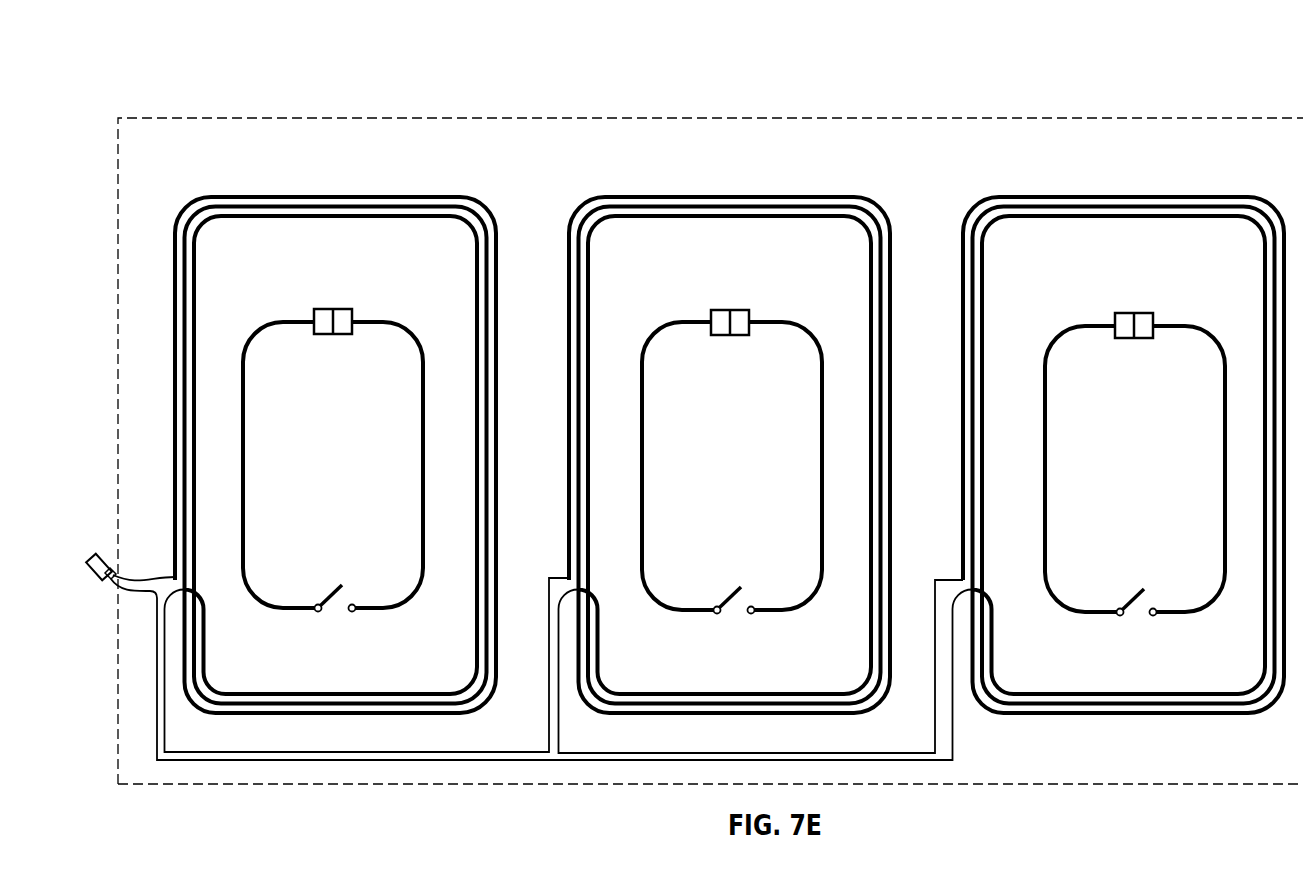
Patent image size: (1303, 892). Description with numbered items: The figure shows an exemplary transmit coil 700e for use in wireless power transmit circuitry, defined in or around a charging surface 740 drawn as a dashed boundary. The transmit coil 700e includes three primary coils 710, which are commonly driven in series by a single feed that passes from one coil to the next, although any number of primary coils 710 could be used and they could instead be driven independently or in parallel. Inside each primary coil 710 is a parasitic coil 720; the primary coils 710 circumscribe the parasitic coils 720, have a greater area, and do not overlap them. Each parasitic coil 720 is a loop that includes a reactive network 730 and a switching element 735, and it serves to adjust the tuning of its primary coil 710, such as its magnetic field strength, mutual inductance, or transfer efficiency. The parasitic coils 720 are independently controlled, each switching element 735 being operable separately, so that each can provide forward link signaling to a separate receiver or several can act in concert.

The transmit coil 700e is at (152, 89).
The charging surface 740 is at (898, 118).
The primary coil 710 is at (380, 197).
The parasitic coil 720 is at (246, 410).
The reactive network 730 is at (340, 309).
The switching element 735 is at (337, 591).